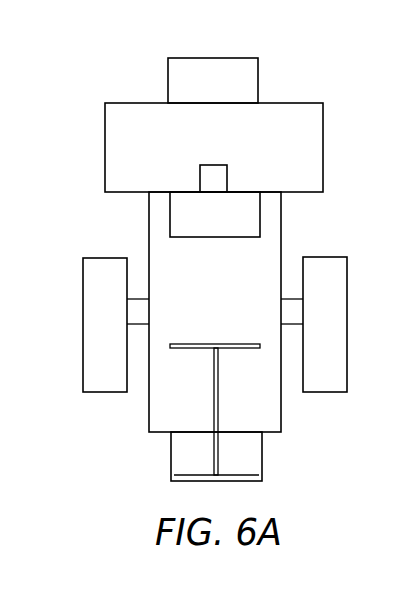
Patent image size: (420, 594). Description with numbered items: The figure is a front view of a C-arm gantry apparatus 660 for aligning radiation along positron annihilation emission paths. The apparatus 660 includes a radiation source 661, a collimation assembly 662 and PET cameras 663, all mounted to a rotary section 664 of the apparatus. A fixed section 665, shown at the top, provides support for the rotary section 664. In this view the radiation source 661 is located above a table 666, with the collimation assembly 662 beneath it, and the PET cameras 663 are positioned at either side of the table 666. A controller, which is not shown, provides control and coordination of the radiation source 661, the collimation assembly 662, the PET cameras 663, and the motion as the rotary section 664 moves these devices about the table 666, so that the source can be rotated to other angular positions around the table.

The C-arm gantry apparatus 660 is at (132, 41).
The radiation source 661 is at (214, 165).
The collimation assembly 662 is at (214, 238).
The PET cameras 663 is at (103, 258).
The rotary section 664 is at (88, 213).
The fixed section 665 is at (213, 58).
The table 666 is at (218, 390).